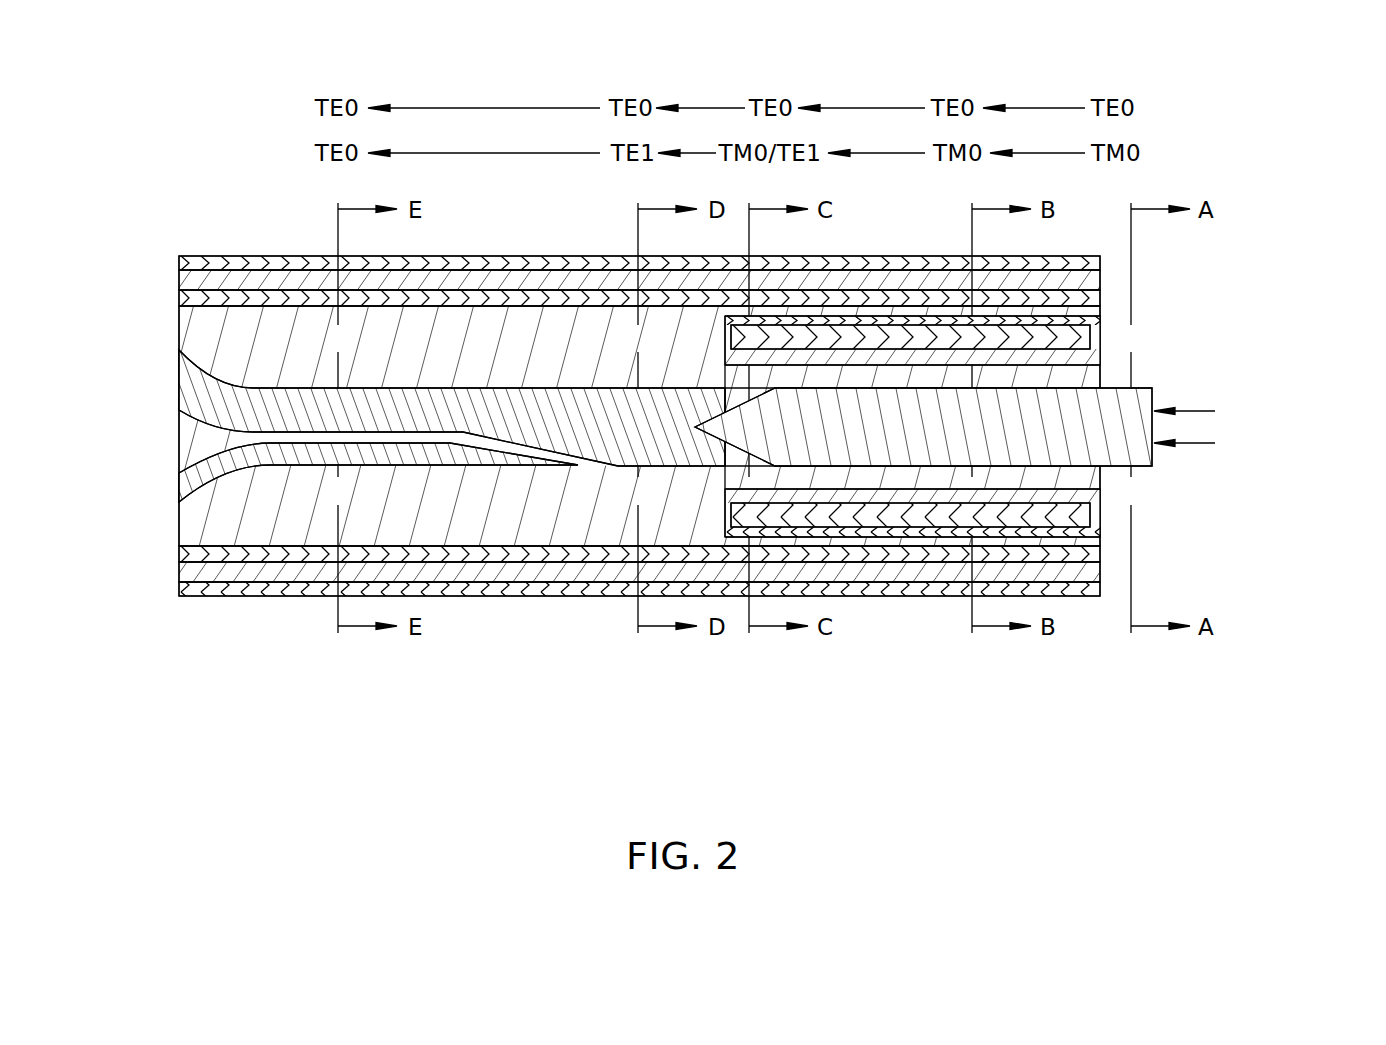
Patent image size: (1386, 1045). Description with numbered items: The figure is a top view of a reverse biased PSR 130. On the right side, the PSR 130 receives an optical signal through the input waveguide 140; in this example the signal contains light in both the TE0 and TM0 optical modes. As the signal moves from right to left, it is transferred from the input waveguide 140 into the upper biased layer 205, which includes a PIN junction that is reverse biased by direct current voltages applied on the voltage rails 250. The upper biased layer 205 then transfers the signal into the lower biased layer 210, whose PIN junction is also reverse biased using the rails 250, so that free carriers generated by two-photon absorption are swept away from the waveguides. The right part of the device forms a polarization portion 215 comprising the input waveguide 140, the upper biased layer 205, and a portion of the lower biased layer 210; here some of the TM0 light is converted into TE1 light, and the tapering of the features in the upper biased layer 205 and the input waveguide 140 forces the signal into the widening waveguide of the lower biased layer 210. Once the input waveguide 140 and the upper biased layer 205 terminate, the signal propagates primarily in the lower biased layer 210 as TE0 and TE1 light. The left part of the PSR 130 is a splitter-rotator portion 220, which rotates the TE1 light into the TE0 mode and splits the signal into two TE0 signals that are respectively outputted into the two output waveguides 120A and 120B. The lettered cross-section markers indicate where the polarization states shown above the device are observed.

The reverse biased PSR 130 is at (220, 62).
The output waveguide 120A is at (372, 395).
The output waveguide 120B is at (305, 516).
The input waveguide 140 is at (1103, 388).
The upper biased layer 205 is at (1103, 326).
The lower biased layer 210 is at (1103, 553).
The voltage rails 250 is at (882, 662).
The splitter-rotator portion 220 is at (605, 705).
The polarization portion 215 is at (1100, 705).